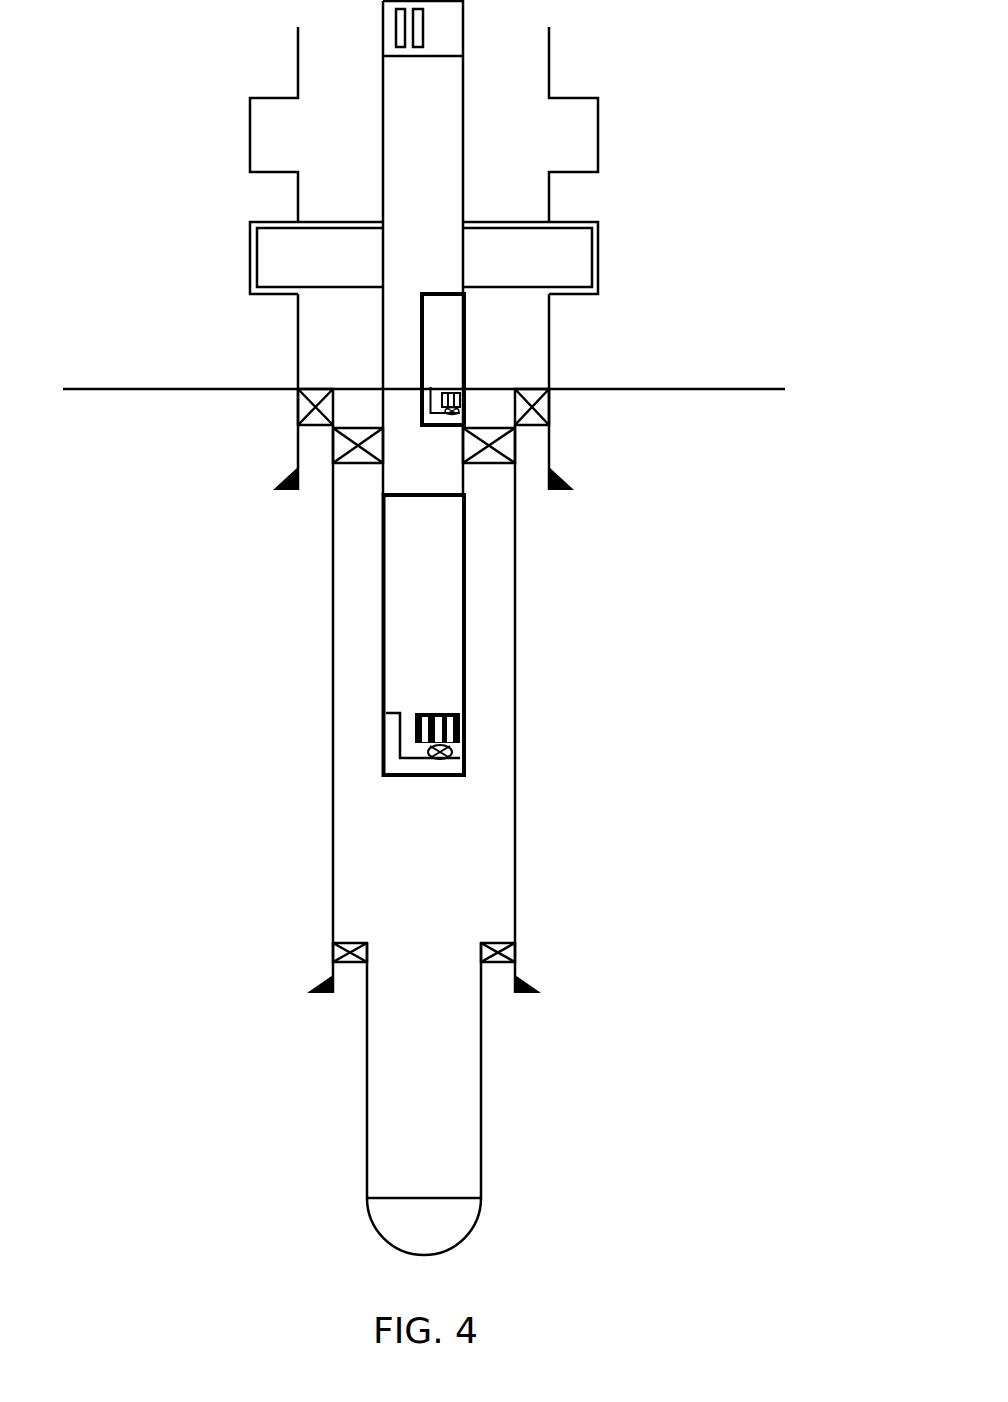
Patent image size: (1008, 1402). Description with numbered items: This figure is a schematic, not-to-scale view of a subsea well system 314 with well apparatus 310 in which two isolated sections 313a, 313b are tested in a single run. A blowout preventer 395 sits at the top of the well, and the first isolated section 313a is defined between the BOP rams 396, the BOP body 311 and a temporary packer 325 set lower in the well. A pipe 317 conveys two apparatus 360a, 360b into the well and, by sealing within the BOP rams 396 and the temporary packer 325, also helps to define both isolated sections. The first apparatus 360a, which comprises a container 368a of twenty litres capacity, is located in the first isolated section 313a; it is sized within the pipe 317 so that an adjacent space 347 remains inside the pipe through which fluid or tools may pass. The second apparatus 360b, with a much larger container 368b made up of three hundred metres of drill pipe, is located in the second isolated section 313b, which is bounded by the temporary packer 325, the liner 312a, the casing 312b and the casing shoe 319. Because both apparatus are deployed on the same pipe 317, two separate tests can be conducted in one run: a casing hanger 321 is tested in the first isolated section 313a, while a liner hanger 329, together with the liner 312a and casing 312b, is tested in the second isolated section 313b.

The well apparatus 310 is at (745, 205).
The BOP body 311 is at (552, 318).
The liner 312a is at (482, 1078).
The casing 312b is at (517, 863).
The isolated section 313a is at (527, 373).
The isolated section 313b is at (497, 708).
The subsea well system 314 is at (240, 630).
The pipe 317 is at (466, 135).
The casing shoe 319 is at (458, 1225).
The casing hanger 321 is at (542, 407).
The temporary packer 325 is at (508, 447).
The liner hanger 329 is at (512, 952).
The adjacent space 347 is at (403, 373).
The apparatus 360a is at (467, 353).
The apparatus 360b is at (467, 611).
The container 368a is at (442, 318).
The container 368b is at (440, 668).
The blowout preventer 395 is at (190, 163).
The BOP rams 396 is at (552, 240).